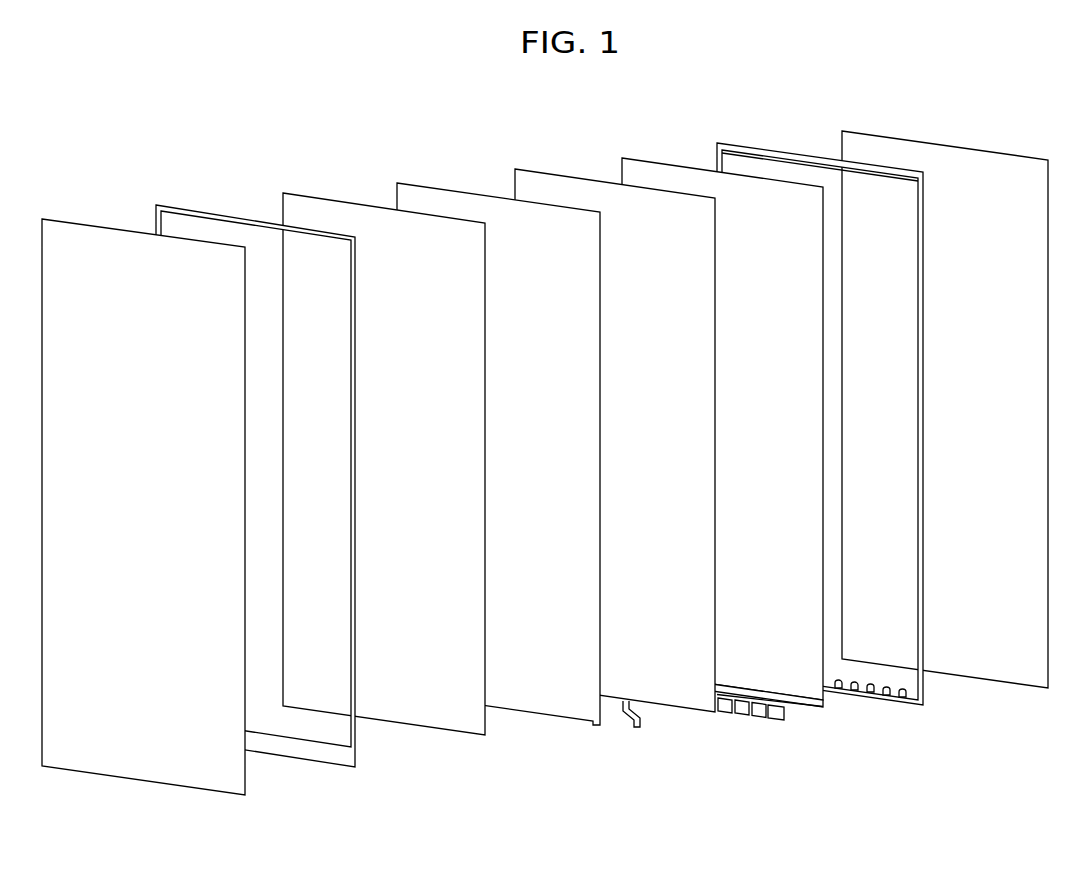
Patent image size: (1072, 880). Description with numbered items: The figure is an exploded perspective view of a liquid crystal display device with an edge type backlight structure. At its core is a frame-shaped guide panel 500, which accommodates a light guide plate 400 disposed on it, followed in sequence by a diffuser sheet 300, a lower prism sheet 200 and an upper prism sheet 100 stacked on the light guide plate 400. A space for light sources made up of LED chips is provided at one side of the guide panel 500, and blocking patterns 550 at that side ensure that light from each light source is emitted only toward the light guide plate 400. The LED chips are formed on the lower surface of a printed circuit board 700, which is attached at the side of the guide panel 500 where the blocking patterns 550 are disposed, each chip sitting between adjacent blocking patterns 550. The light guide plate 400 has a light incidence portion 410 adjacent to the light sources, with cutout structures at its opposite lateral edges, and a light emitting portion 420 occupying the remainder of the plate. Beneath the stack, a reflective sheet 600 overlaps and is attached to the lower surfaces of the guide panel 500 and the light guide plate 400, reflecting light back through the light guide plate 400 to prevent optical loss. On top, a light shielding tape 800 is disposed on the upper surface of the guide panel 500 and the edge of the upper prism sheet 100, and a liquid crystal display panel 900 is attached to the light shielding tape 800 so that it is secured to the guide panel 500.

The upper prism sheet 100 is at (321, 203).
The lower prism sheet 200 is at (440, 192).
The diffuser sheet 300 is at (552, 178).
The light guide plate 400 is at (650, 166).
The light incidence portion 410 is at (815, 708).
The light emitting portion 420 is at (826, 698).
The guide panel 500 is at (748, 148).
The blocking patterns 550 is at (901, 698).
The reflective sheet 600 is at (875, 142).
The printed circuit board 700 is at (772, 719).
The light shielding tape 800 is at (178, 208).
The liquid crystal display panel 900 is at (79, 222).